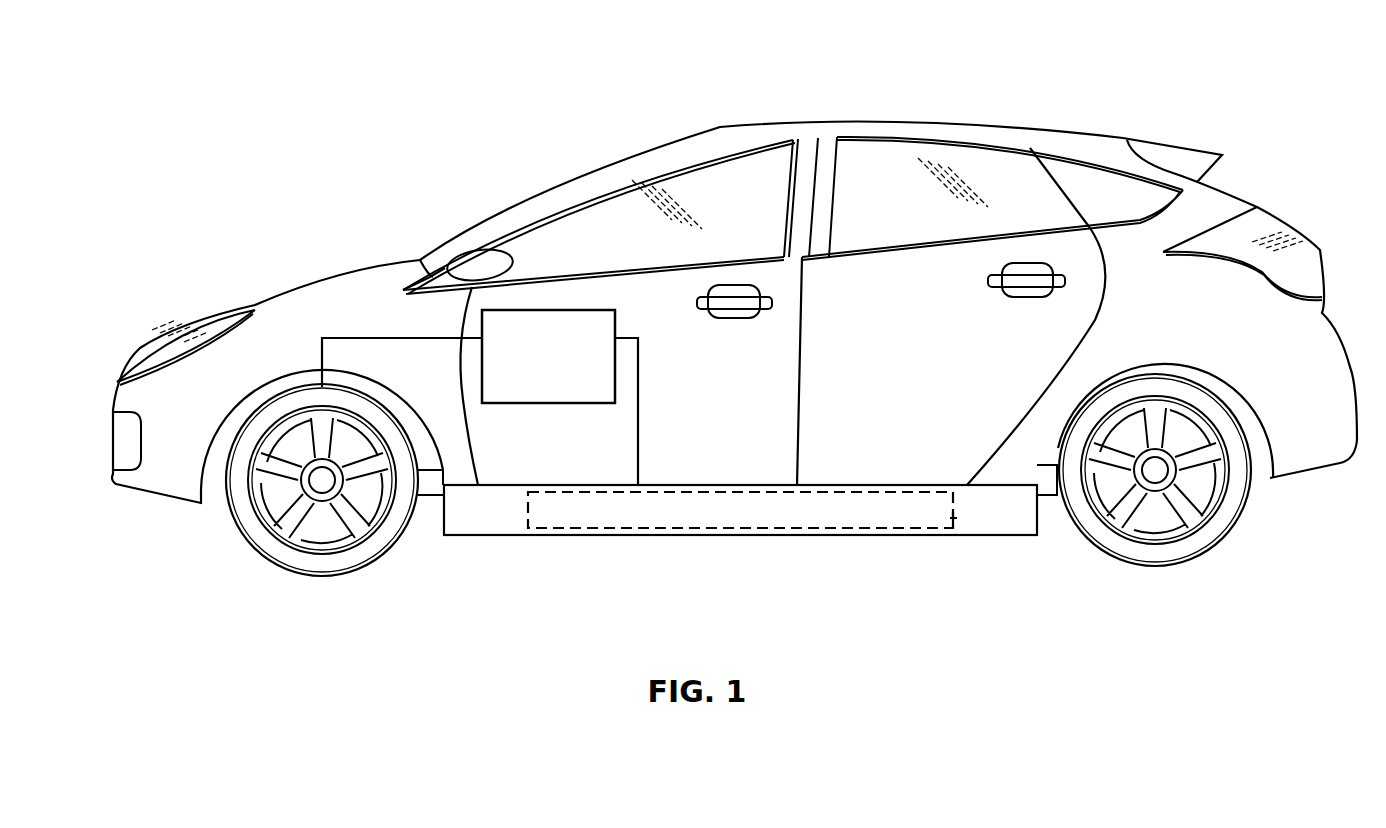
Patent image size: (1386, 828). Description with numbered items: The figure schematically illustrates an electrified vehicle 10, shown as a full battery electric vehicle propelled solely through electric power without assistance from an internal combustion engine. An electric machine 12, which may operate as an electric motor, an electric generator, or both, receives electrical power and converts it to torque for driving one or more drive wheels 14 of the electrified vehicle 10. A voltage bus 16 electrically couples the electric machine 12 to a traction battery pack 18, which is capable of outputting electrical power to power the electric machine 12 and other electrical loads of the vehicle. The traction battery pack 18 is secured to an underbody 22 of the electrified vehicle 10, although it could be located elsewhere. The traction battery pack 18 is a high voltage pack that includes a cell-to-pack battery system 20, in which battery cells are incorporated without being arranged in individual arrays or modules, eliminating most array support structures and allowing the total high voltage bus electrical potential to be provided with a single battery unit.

The electrified vehicle 10 is at (1070, 76).
The electric machine 12 is at (482, 332).
The drive wheels 14 is at (264, 561).
The voltage bus 16 is at (622, 428).
The traction battery pack 18 is at (882, 537).
The cell-to-pack battery system 20 is at (957, 518).
The underbody 22 is at (502, 488).